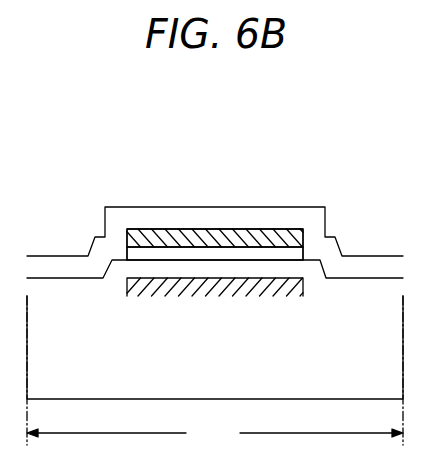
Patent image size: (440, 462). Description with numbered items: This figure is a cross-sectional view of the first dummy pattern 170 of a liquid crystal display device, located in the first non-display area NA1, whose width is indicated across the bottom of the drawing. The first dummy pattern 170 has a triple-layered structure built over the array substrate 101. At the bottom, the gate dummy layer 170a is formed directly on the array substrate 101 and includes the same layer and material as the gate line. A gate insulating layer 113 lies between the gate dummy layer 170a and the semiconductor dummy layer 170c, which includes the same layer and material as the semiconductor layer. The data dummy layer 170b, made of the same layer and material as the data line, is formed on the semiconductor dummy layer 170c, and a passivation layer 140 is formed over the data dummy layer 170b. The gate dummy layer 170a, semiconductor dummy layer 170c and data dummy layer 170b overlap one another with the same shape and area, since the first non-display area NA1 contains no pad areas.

The array substrate 101 is at (393, 388).
The gate insulating layer 113 is at (215, 269).
The passivation layer 140 is at (310, 230).
The first dummy pattern 170 is at (185, 125).
The gate dummy layer 170a is at (150, 283).
The data dummy layer 170b is at (209, 235).
The semiconductor dummy layer 170c is at (258, 253).
The first non-display area NA1 is at (215, 432).